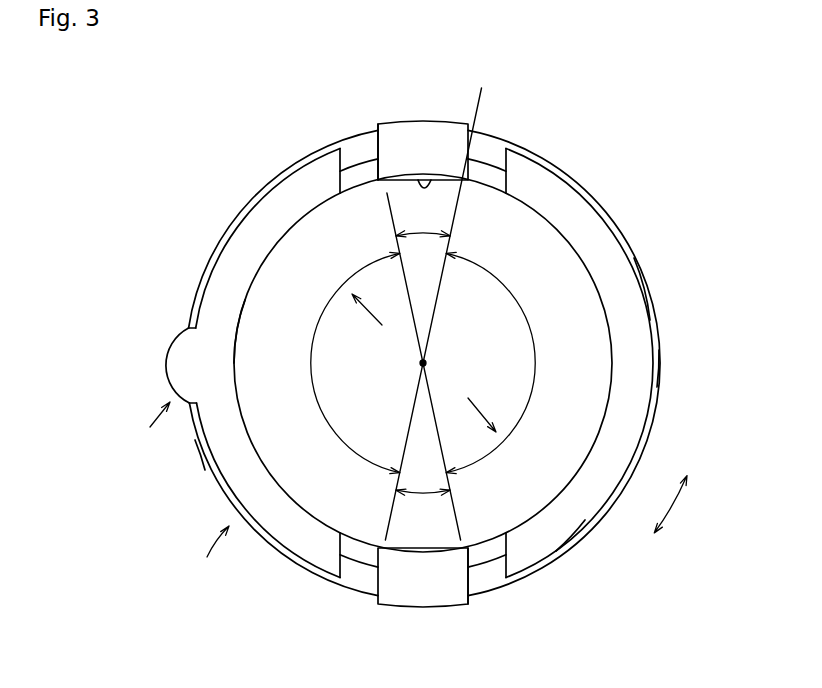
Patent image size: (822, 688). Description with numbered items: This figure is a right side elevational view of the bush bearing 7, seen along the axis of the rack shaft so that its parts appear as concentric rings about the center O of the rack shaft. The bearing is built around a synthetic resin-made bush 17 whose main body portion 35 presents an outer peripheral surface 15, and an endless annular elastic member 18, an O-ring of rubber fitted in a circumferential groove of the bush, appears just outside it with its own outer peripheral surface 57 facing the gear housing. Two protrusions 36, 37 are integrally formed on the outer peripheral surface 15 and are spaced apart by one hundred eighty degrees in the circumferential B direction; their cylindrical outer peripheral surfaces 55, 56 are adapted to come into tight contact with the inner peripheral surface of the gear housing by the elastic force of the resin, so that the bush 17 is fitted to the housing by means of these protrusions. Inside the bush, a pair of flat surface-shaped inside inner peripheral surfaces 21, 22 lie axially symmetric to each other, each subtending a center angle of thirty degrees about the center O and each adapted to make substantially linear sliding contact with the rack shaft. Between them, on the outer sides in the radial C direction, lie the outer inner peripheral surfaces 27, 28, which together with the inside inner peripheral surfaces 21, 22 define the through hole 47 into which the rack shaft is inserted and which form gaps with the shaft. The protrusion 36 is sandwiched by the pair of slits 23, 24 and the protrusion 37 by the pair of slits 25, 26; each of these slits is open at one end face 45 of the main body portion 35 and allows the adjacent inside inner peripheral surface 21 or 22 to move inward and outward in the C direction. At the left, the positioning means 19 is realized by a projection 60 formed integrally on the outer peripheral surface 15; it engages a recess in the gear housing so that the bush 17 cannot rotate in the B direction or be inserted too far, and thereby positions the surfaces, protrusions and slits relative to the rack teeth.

The bush bearing 7 is at (212, 558).
The outer peripheral surface 15 is at (646, 306).
The bush 17 is at (567, 544).
The endless annular elastic member 18 is at (213, 456).
The positioning means 19 is at (147, 429).
The inside inner peripheral surface 21 is at (440, 302).
The inside inner peripheral surface 22 is at (412, 548).
The slit 23 is at (486, 156).
The slit 24 is at (357, 157).
The slit 25 is at (488, 572).
The slit 26 is at (356, 573).
The outer inner peripheral surface 27 is at (259, 272).
The outer inner peripheral surface 28 is at (570, 241).
The main body portion 35 is at (571, 208).
The protrusion 36 is at (421, 122).
The protrusion 37 is at (420, 604).
The end face 45 is at (626, 421).
The through hole 47 is at (327, 499).
The outer peripheral surface 55 is at (390, 121).
The outer peripheral surface 56 is at (448, 607).
The outer peripheral surface 57 is at (248, 199).
The projection 60 is at (171, 361).
The center O is at (422, 364).
The radial direction C is at (368, 314).
The circumferential direction B is at (683, 505).